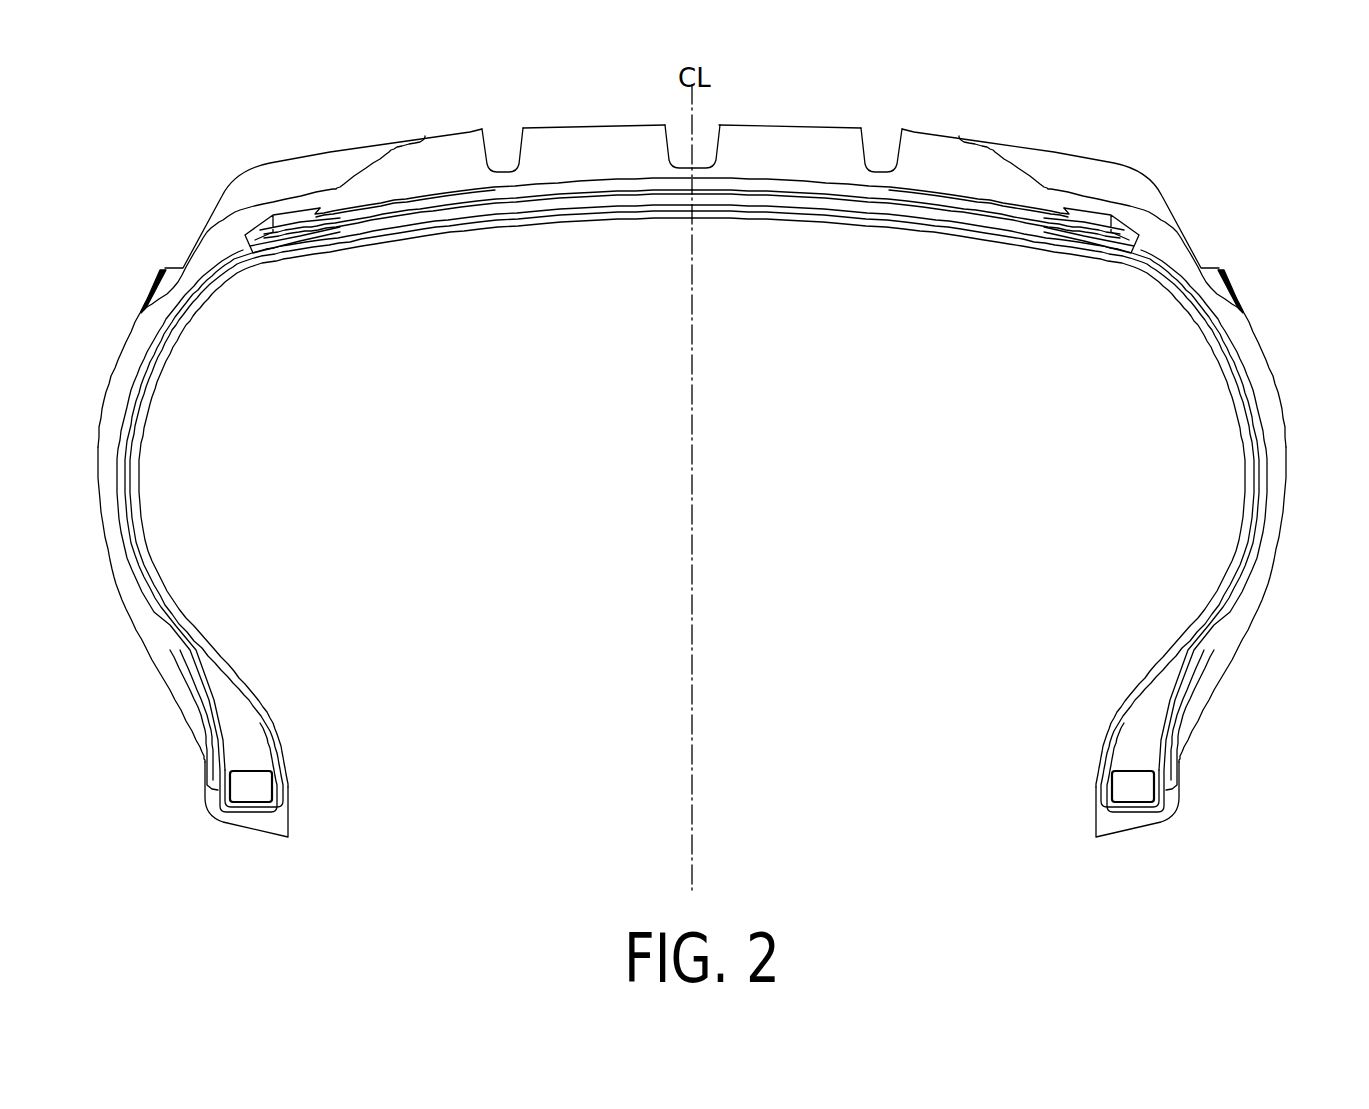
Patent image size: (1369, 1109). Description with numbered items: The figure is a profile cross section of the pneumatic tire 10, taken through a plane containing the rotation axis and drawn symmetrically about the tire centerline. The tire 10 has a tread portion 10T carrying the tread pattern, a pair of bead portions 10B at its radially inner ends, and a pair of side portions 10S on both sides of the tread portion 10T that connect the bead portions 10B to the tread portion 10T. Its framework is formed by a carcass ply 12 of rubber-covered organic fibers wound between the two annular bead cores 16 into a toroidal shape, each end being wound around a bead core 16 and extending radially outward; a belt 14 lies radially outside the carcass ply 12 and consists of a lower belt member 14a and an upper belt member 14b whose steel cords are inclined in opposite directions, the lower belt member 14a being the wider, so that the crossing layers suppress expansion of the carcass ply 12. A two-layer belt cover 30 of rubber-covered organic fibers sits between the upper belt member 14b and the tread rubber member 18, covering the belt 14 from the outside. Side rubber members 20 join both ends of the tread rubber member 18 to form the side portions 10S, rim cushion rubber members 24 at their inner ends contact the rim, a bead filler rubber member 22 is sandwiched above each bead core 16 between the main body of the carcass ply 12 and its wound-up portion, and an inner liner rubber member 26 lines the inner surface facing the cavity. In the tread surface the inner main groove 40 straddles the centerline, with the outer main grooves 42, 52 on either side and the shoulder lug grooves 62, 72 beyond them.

The tire 10 is at (850, 113).
The tread portion 10T is at (1100, 158).
The side portions 10S is at (103, 560).
The bead portions 10B is at (224, 835).
The carcass ply 12 is at (130, 462).
The belt 14 is at (767, 231).
The lower belt member 14a is at (1124, 235).
The upper belt member 14b is at (1116, 218).
The bead core 16 is at (246, 806).
The tread rubber member 18 is at (783, 150).
The side rubber members 20 is at (157, 660).
The bead filler rubber member 22 is at (252, 728).
The rim cushion rubber members 24 is at (201, 782).
The inner liner rubber member 26 is at (528, 222).
The belt cover 30 is at (1043, 213).
The inner main groove 40 is at (706, 160).
The outer main groove 42 is at (508, 158).
The outer main groove 52 is at (890, 160).
The shoulder lug grooves 62 is at (338, 188).
The shoulder lug grooves 72 is at (1140, 193).